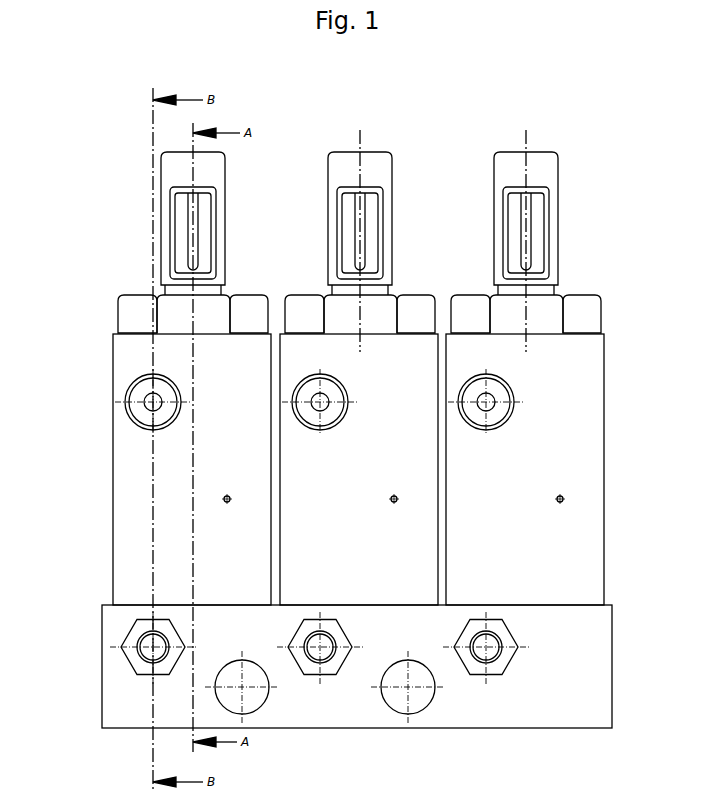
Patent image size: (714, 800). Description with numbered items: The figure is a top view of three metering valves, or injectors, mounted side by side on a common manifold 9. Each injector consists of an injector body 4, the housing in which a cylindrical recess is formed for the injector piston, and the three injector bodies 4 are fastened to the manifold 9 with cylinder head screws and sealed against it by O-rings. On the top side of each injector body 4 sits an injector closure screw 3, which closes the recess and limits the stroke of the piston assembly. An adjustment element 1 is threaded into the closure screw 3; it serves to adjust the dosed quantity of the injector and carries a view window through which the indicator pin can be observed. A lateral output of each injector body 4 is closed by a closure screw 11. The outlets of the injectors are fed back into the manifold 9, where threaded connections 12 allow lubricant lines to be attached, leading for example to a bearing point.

The adjustment element 1 is at (552, 153).
The injector closure screw 3 is at (582, 300).
The injector body 4 is at (138, 478).
The manifold 9 is at (120, 697).
The closure screw 11 is at (141, 394).
The threaded connection 12 is at (133, 630).